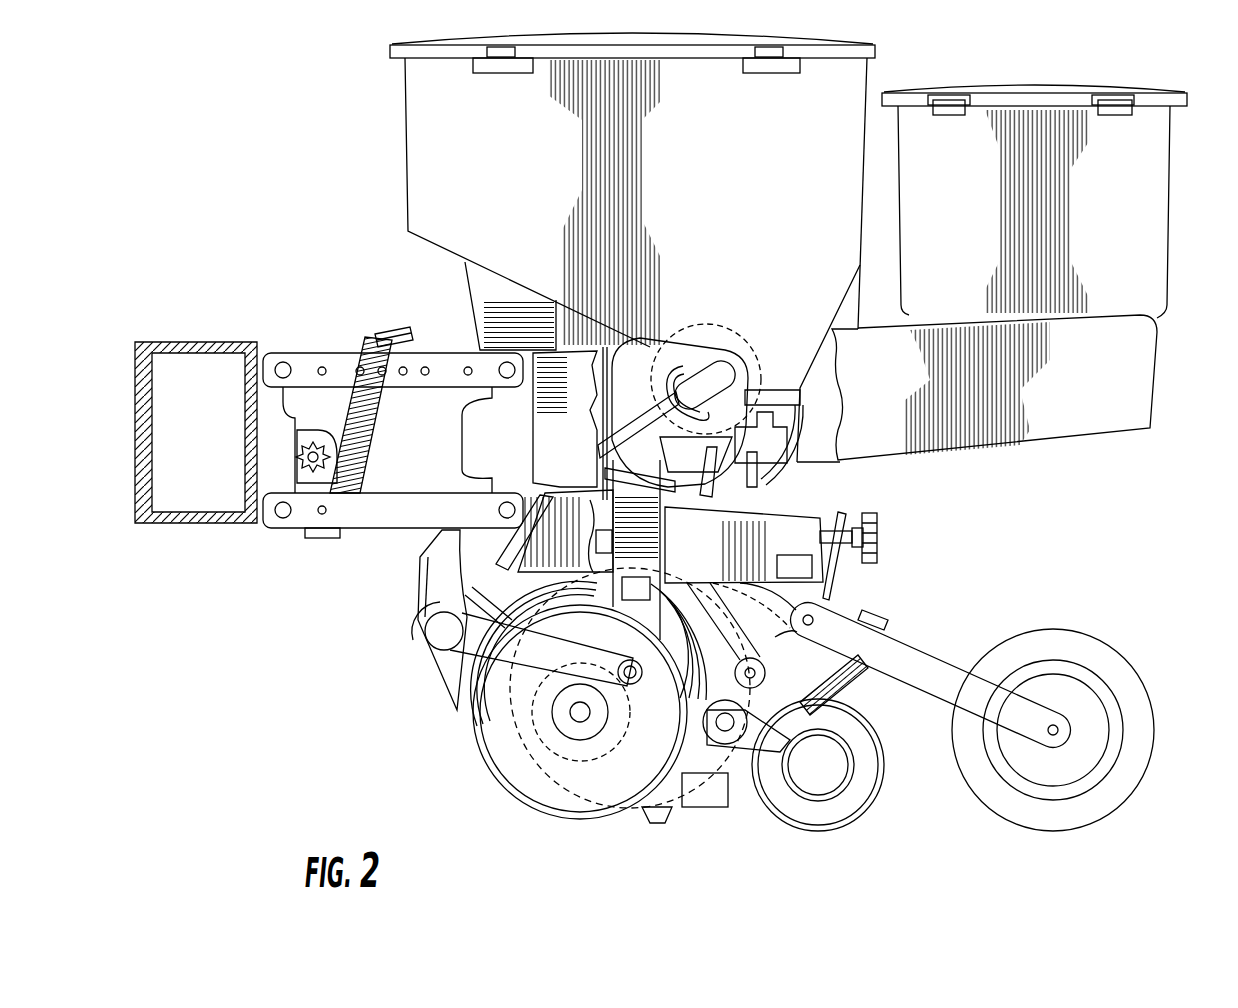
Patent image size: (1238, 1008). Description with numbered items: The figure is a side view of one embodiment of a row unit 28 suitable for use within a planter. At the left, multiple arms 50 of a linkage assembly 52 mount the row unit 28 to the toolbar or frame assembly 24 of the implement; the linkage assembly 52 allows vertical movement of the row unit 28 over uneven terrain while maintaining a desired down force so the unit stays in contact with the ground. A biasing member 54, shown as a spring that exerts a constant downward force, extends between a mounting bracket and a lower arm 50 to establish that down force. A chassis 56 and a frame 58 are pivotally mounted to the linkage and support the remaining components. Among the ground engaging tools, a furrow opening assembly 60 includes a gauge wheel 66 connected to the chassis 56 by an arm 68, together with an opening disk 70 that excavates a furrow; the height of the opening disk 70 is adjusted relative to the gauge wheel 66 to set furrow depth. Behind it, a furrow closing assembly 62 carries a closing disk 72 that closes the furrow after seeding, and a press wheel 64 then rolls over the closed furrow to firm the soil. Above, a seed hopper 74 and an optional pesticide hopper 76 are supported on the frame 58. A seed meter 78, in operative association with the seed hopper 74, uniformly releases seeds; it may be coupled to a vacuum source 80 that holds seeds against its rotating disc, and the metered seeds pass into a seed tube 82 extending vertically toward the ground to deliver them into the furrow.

The toolbar or frame assembly 24 is at (184, 336).
The row unit 28 is at (260, 226).
The arms 50 is at (340, 360).
The linkage assembly 52 is at (270, 548).
The biasing member 54 is at (370, 433).
The chassis 56 is at (803, 522).
The frame 58 is at (963, 447).
The furrow opening assembly 60 is at (478, 784).
The furrow closing assembly 62 is at (872, 811).
The press wheel 64 is at (992, 785).
The gauge wheel 66 is at (535, 805).
The arm 68 is at (490, 643).
The opening disk 70 is at (557, 808).
The closing disk 72 is at (793, 802).
The seed hopper 74 is at (810, 163).
The pesticide hopper 76 is at (957, 163).
The seed meter 78 is at (652, 345).
The vacuum source 80 is at (741, 332).
The seed tube 82 is at (670, 545).